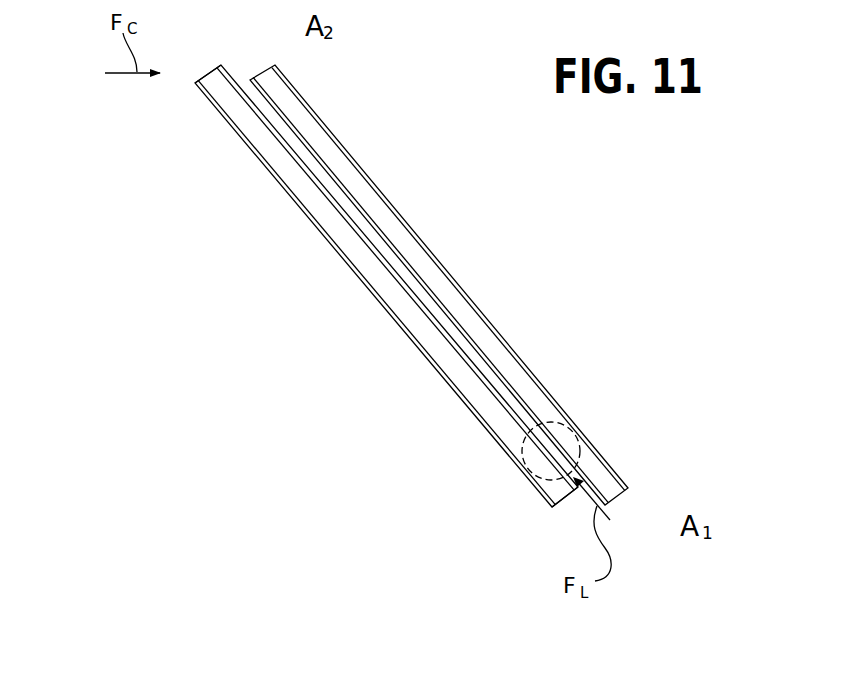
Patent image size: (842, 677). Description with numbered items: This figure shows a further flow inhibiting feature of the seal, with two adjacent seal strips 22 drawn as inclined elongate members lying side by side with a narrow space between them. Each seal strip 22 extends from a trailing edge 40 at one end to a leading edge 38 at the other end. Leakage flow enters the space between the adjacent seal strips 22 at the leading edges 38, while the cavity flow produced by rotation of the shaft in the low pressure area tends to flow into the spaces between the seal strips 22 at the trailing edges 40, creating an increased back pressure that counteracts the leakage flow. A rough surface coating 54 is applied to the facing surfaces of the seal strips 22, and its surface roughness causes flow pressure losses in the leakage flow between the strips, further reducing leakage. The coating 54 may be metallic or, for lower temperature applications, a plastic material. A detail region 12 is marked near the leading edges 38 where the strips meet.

The gripping device 12 is at (518, 471).
The seal strips 22 is at (370, 287).
The leading edges 38 is at (560, 507).
The trailing edges 40 is at (207, 74).
The rough surface coating 54 is at (362, 226).